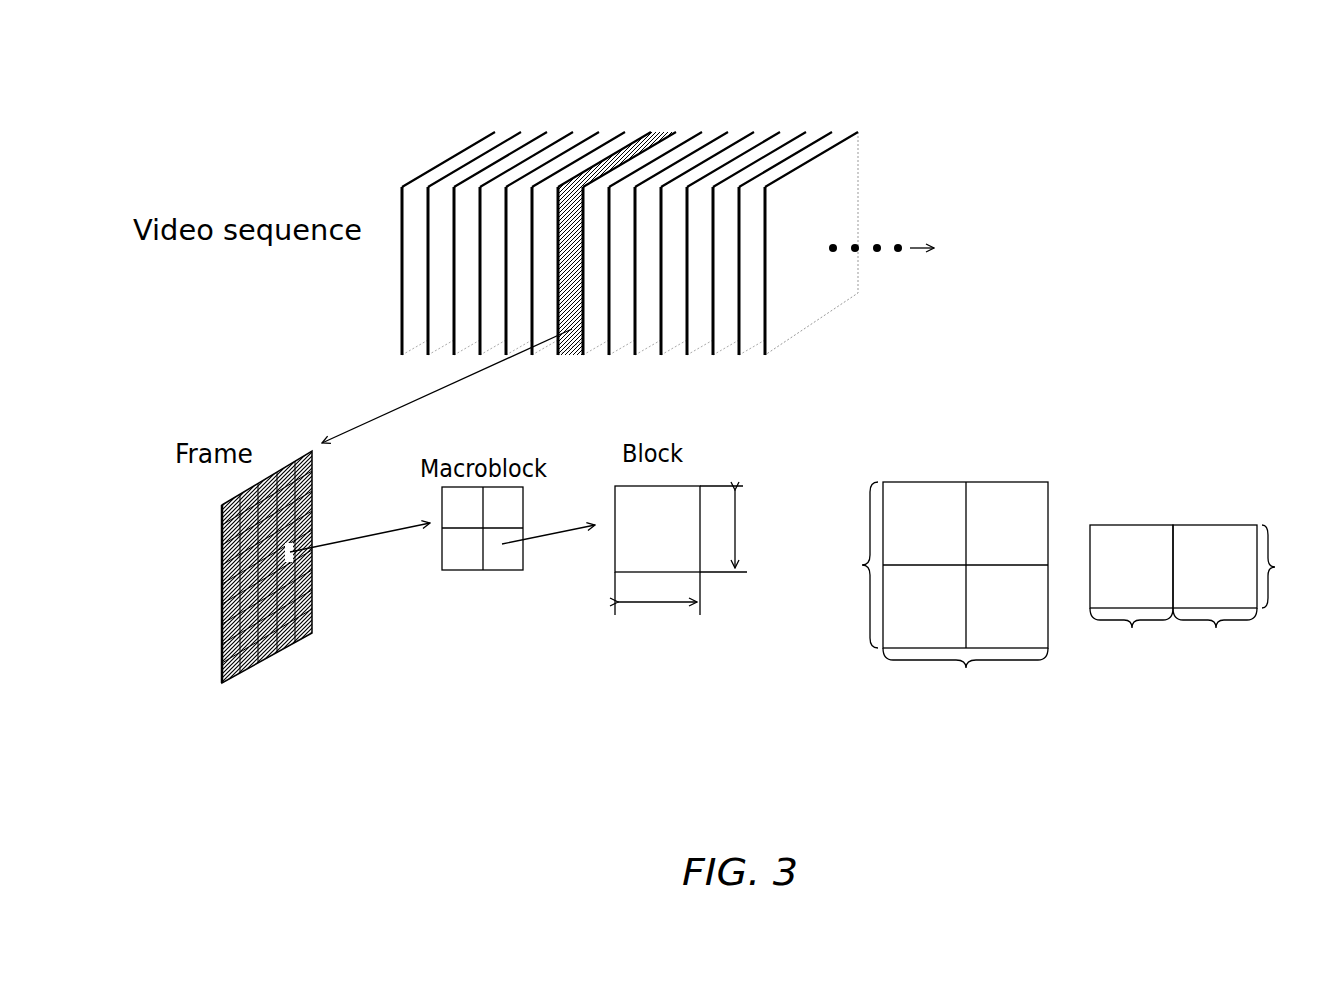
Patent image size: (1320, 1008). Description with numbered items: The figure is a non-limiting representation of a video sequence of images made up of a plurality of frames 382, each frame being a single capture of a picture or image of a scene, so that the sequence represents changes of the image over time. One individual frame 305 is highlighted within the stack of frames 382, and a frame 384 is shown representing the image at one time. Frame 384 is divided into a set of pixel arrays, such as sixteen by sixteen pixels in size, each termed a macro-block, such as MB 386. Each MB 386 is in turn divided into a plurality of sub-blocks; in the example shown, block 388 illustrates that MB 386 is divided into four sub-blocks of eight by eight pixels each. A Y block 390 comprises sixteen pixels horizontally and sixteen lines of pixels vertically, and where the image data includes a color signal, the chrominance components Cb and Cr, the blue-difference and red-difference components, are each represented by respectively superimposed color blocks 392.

The plurality of frames 382 is at (872, 127).
The frame 305 is at (597, 352).
The frame 384 is at (335, 667).
The macro-block 386 is at (547, 568).
The block 388 is at (685, 486).
The Y block 390 is at (965, 482).
The color blocks 392 is at (1165, 525).